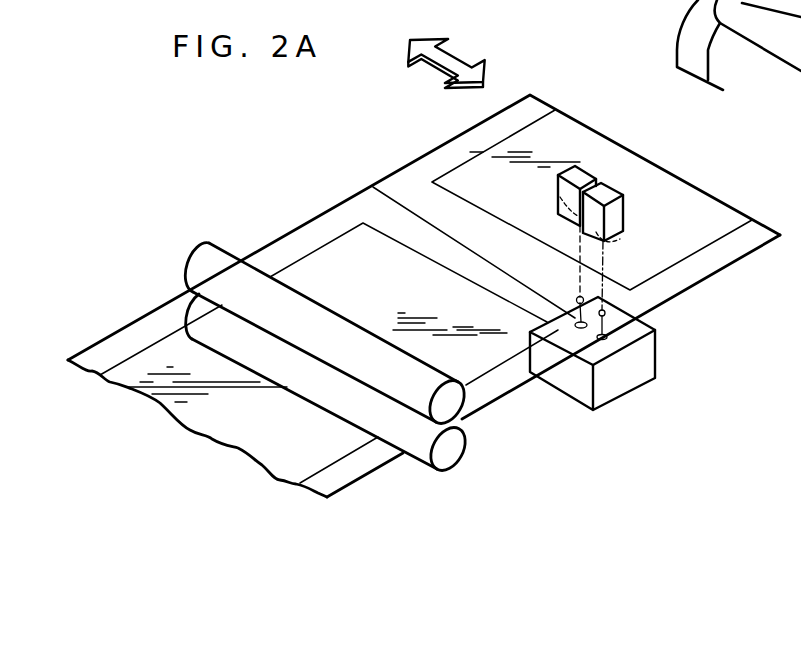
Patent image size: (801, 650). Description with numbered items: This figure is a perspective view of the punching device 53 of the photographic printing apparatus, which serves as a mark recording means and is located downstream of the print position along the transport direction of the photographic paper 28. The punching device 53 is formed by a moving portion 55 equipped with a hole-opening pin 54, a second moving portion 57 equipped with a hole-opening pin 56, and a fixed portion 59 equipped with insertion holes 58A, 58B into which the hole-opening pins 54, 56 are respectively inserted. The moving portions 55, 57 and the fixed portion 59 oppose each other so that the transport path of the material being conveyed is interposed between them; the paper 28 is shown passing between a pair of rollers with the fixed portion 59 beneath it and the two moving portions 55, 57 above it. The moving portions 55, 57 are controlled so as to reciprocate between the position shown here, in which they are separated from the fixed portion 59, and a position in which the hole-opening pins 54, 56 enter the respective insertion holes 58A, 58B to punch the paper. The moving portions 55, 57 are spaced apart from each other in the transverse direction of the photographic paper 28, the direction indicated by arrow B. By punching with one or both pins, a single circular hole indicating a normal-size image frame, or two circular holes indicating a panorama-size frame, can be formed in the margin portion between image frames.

The photographic paper 28 is at (498, 403).
The punching device 53 is at (672, 382).
The hole-opening pin 54 is at (563, 203).
The moving portion 55 is at (585, 170).
The hole-opening pin 56 is at (620, 239).
The moving portion 57 is at (642, 232).
The insertion hole 58A is at (578, 305).
The insertion hole 58B is at (606, 338).
The fixed portion 59 is at (583, 414).
The arrow B is at (457, 63).